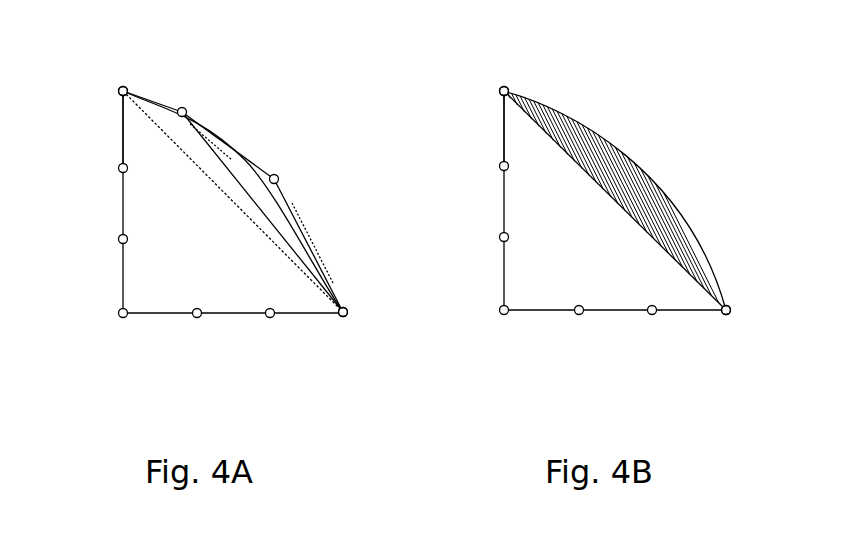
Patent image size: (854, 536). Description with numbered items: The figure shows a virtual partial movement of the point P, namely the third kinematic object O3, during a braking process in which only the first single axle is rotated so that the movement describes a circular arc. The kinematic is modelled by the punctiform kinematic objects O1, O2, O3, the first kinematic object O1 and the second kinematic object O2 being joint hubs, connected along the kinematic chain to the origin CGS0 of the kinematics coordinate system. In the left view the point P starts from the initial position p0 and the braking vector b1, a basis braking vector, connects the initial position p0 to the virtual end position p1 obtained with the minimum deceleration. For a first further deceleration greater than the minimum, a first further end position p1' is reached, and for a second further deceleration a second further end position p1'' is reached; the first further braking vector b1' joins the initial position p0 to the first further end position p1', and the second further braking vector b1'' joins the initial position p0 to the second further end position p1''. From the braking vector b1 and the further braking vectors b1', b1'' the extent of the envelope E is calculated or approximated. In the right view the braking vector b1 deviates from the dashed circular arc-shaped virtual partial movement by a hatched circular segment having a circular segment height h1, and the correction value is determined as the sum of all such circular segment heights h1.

In FIG. 4A, the virtual end position p1 is at (87, 63).
In FIG. 4B, the virtual end position p1 is at (467, 63).
In FIG. 4A, the first further virtual end position p1' is at (184, 89).
In FIG. 4A, the second further virtual end position p1'' is at (300, 160).
In FIG. 4A, the initial position p0 is at (349, 307).
In FIG. 4B, the initial position p0 is at (732, 303).
In FIG. 4A, the braking vector b1 is at (152, 129).
In FIG. 4B, the braking vector b1 is at (516, 128).
In FIG. 4A, the first further braking vector b1' is at (228, 135).
In FIG. 4A, the second further braking vector b1'' is at (312, 245).
In FIG. 4A, the envelope E is at (240, 147).
In FIG. 4B, the circular segment height h1 is at (633, 192).
In FIG. 4A, the first kinematic object O1 is at (117, 238).
In FIG. 4B, the first kinematic object O1 is at (498, 236).
In FIG. 4A, the second kinematic object O2 is at (117, 169).
In FIG. 4B, the second kinematic object O2 is at (498, 167).
In FIG. 4A, the third kinematic object O3 is at (116, 96).
In FIG. 4B, the third kinematic object O3 is at (497, 96).
In FIG. 4A, the origin of the kinematics coordinate system CGS0 is at (120, 319).
In FIG. 4B, the origin of the kinematics coordinate system CGS0 is at (500, 316).